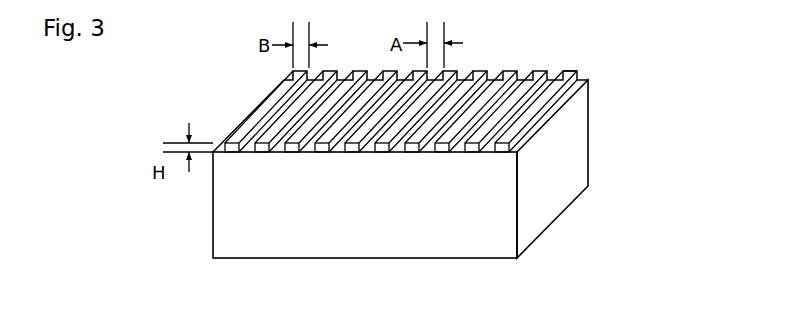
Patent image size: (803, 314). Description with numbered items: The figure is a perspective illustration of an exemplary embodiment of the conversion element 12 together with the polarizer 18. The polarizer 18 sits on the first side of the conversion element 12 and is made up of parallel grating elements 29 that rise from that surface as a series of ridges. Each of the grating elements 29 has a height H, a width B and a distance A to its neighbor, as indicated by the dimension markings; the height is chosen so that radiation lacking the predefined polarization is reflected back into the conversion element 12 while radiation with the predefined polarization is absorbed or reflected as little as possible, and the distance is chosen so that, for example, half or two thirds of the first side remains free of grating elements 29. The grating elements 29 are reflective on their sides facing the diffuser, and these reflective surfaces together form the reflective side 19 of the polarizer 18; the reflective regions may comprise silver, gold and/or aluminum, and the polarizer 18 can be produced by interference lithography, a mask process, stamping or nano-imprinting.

The conversion element 12 is at (589, 132).
The polarizer 18 is at (578, 74).
The reflective side 19 is at (290, 160).
The grating elements 29 is at (263, 153).